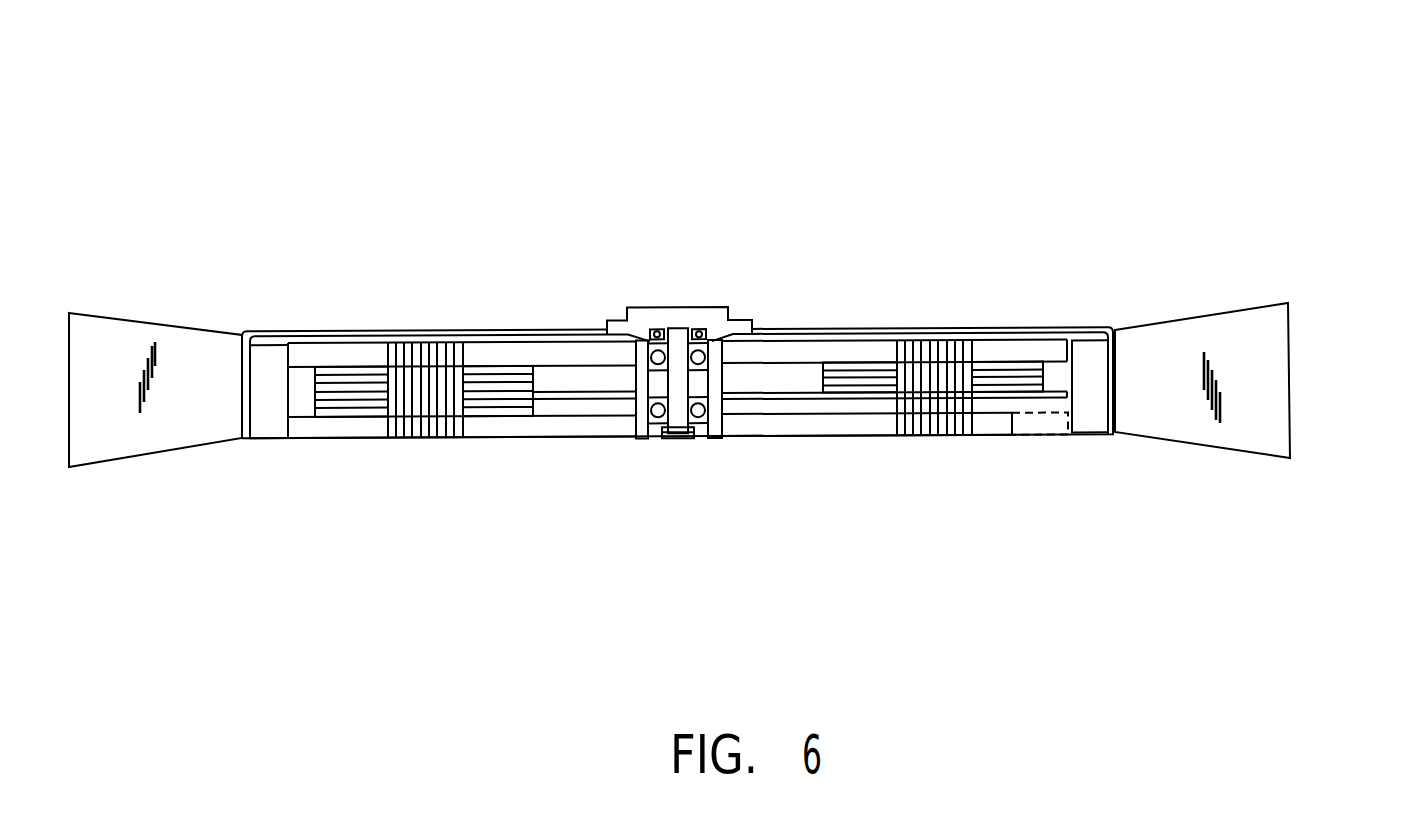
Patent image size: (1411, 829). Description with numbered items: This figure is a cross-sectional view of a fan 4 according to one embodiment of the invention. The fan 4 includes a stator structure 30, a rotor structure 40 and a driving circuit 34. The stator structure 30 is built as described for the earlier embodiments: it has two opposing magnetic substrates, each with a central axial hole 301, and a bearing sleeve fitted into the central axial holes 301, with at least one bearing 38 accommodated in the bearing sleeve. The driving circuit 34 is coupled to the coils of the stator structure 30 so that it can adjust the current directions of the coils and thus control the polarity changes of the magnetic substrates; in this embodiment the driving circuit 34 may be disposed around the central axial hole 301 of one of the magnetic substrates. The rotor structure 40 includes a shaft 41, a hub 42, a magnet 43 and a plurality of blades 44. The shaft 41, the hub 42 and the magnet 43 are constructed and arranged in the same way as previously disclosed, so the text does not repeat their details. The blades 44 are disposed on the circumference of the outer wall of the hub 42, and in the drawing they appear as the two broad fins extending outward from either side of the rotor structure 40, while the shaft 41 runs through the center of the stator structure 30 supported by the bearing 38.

The fan 4 is at (118, 68).
The stator structure 30 is at (333, 455).
The central axial hole 301 is at (678, 430).
The driving circuit 34 is at (578, 400).
The bearing 38 is at (703, 400).
The rotor structure 40 is at (326, 314).
The shaft 41 is at (683, 342).
The hub 42 is at (838, 327).
The magnet 43 is at (1088, 362).
The blades 44 is at (1265, 348).